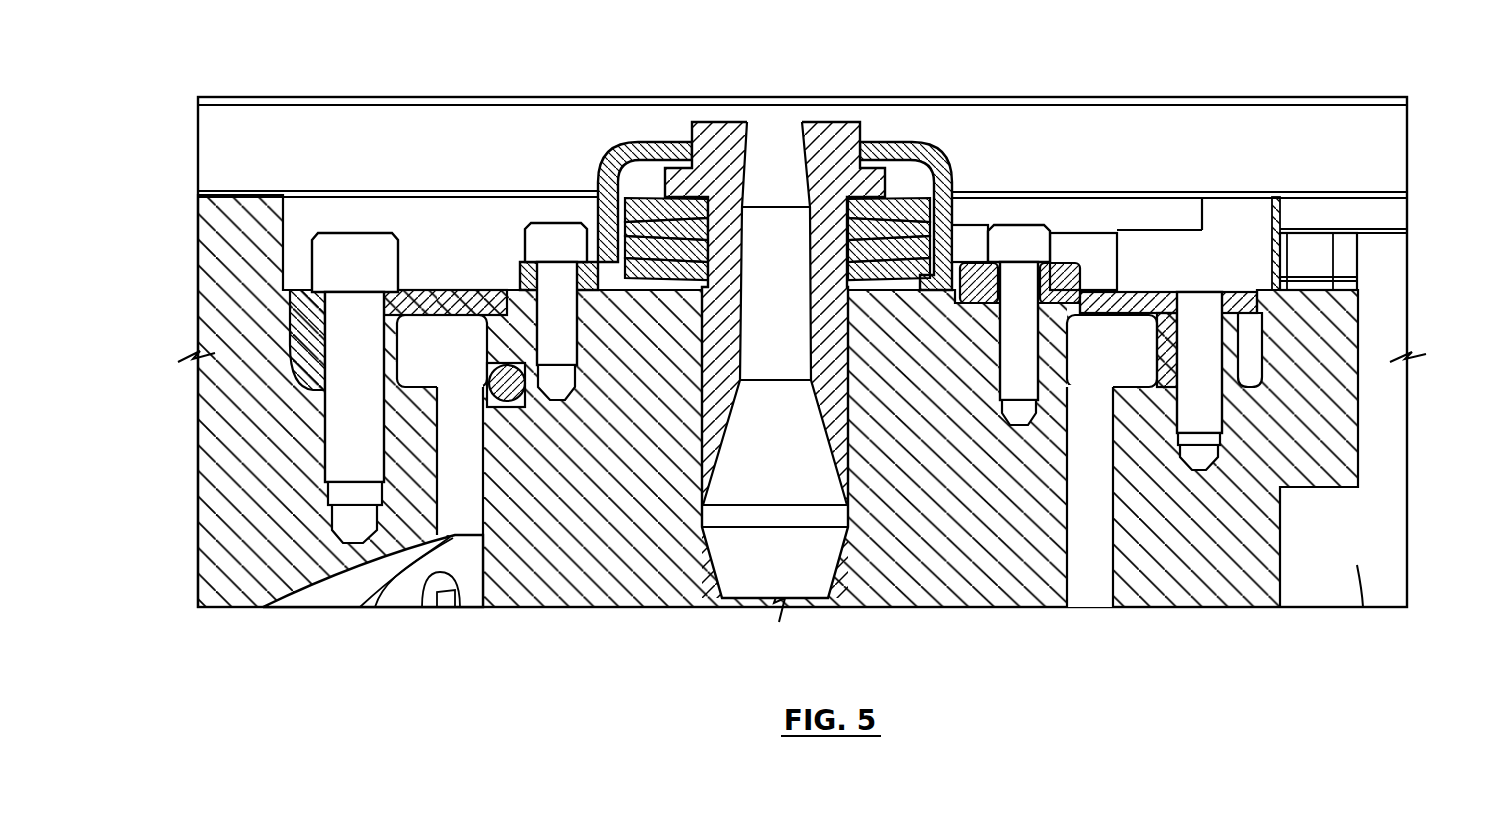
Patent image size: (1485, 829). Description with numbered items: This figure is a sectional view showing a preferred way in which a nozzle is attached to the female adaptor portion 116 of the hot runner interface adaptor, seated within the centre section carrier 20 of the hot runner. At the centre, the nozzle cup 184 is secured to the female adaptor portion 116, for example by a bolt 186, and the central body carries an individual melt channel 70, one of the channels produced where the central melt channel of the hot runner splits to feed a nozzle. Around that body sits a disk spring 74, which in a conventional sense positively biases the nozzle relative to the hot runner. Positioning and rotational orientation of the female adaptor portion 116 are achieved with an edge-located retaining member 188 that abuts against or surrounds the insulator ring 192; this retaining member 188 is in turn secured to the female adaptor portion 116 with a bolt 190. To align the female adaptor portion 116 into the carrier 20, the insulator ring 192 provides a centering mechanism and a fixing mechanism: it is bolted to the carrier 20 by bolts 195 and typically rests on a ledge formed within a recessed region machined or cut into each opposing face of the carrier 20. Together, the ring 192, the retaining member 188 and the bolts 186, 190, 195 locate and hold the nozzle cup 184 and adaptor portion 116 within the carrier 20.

The centre section carrier 20 is at (225, 256).
The individual melt channel 70 is at (788, 192).
The disk spring 74 is at (912, 198).
The female adaptor portion 116 is at (973, 577).
The nozzle cup 184 is at (652, 142).
The bolt 186 is at (553, 237).
The edge-located retaining member 188 is at (1063, 283).
The bolt 190 is at (1012, 240).
The insulator ring 192 is at (446, 300).
The bolt 195 is at (355, 245).